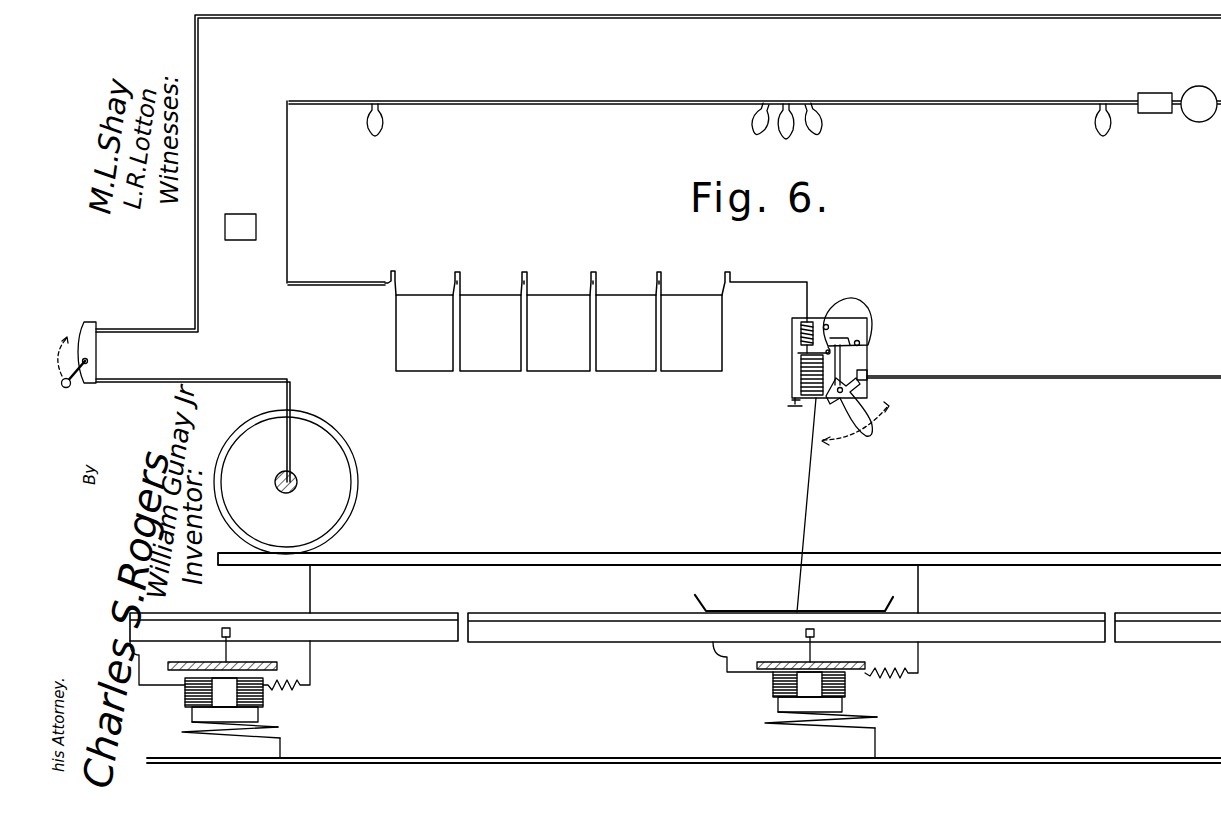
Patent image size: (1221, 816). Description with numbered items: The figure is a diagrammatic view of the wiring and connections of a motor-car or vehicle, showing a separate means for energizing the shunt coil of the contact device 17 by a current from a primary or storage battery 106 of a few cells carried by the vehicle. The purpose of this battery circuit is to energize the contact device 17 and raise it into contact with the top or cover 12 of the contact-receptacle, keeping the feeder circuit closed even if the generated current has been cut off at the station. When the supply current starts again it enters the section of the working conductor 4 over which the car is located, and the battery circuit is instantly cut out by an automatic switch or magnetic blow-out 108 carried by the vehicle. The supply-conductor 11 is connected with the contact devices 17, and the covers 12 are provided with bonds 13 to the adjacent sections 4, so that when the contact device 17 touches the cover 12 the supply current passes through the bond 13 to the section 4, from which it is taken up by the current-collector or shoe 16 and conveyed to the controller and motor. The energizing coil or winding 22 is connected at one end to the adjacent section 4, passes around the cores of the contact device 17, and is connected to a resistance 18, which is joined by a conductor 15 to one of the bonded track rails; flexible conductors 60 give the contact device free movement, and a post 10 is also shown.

The section of the working conductor 4 is at (624, 634).
The contact post 10 is at (594, 743).
The supply-conductor 11 is at (580, 751).
The top or cover 12 is at (516, 658).
The bond 13 is at (808, 650).
The conductor 15 is at (925, 593).
The current-collector or shoe 16 is at (794, 603).
The contact device 17 is at (778, 707).
The resistance 18 is at (312, 688).
The energizing coil or winding 22 is at (451, 673).
The flexible conductors 60 is at (525, 734).
The storage battery 106 is at (596, 310).
The automatic switch or magnetic blow-out 108 is at (1004, 371).